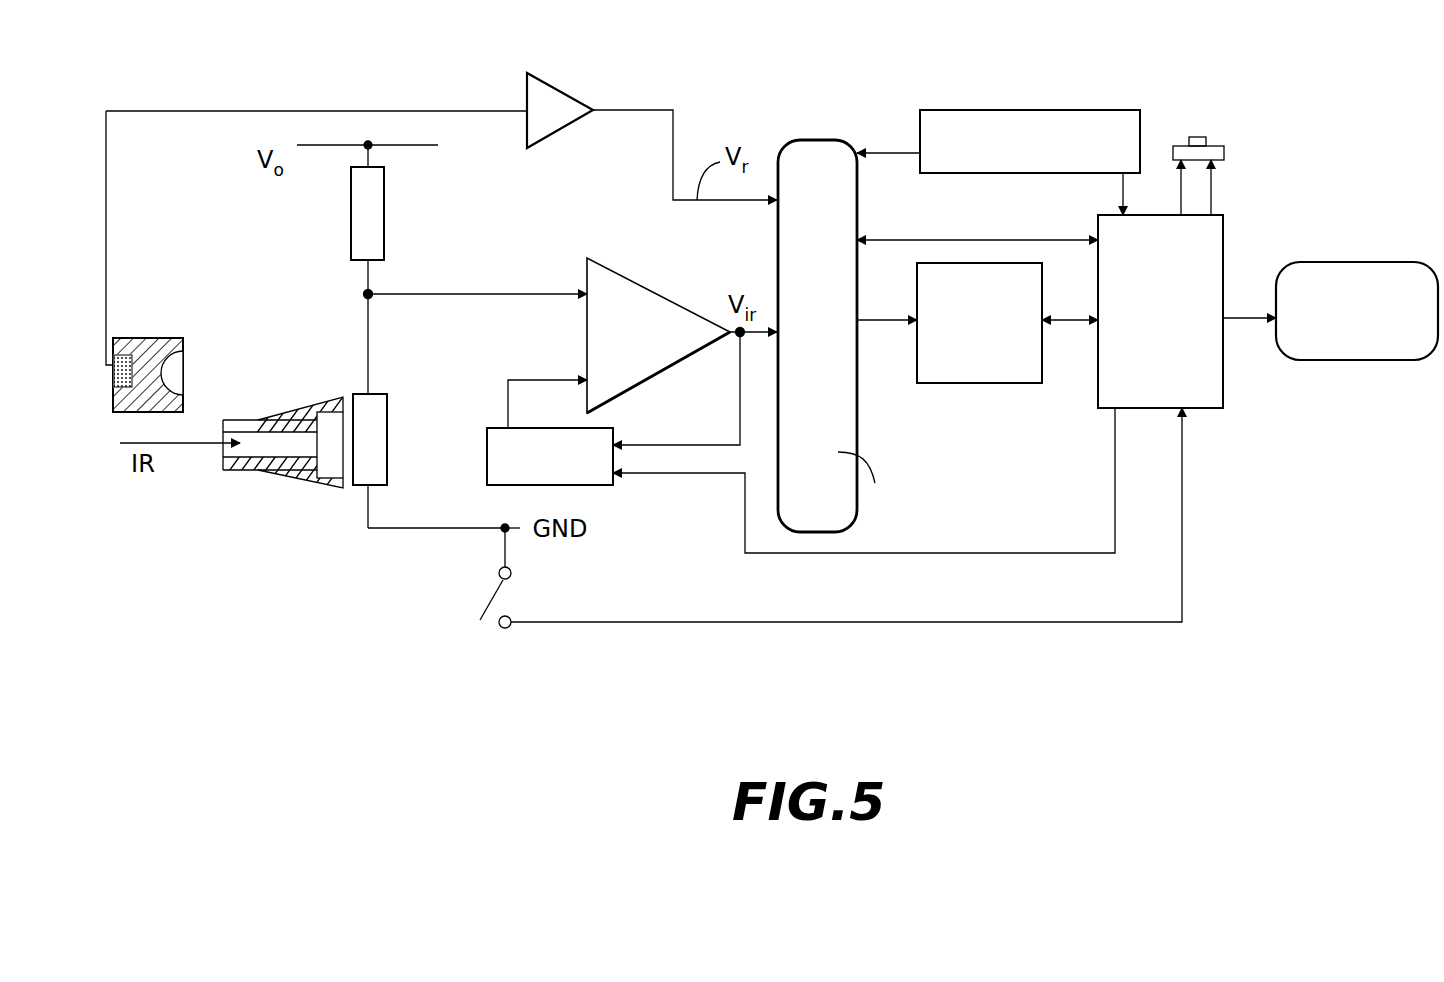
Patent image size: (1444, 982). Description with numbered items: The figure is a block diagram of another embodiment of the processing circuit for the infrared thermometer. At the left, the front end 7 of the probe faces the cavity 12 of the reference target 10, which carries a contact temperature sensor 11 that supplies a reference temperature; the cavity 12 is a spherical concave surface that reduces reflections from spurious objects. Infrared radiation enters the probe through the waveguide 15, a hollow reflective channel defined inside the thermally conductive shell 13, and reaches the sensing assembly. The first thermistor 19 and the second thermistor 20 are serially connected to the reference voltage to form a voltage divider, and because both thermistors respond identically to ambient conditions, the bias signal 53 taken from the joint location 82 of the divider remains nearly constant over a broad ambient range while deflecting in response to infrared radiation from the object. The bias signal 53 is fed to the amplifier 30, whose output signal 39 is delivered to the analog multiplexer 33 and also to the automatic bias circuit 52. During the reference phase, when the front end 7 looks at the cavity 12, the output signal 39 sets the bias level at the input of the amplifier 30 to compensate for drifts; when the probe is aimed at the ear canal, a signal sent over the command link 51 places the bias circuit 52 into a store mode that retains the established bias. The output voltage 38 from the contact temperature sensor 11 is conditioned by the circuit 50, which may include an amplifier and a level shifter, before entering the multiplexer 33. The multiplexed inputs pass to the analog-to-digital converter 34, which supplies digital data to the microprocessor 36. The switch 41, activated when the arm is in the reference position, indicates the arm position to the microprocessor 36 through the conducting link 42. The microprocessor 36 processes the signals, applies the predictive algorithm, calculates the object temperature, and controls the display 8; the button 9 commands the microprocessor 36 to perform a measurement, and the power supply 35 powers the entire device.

The front end 7 is at (220, 458).
The display 8 is at (1395, 335).
The button 9 is at (1210, 148).
The reference target 10 is at (183, 338).
The contact temperature sensor 11 is at (128, 338).
The cavity 12 is at (173, 374).
The shell 13 is at (307, 412).
The waveguide 15 is at (257, 450).
The first thermistor 19 is at (360, 470).
The second thermistor 20 is at (350, 188).
The amplifier 30 is at (618, 275).
The analog multiplexer 33 is at (820, 155).
The analog-to-digital converter 34 is at (965, 362).
The power supply 35 is at (1110, 115).
The microprocessor 36 is at (1148, 375).
The output voltage Vr 38 is at (335, 110).
The output signal Vir 39 is at (757, 338).
The switch 41 is at (502, 598).
The conducting link 42 is at (855, 617).
The conditioning circuit 50 is at (553, 83).
The command link 51 is at (1020, 551).
The bias circuit 52 is at (497, 455).
The bias signal 53 is at (488, 294).
The joint location 82 is at (375, 290).